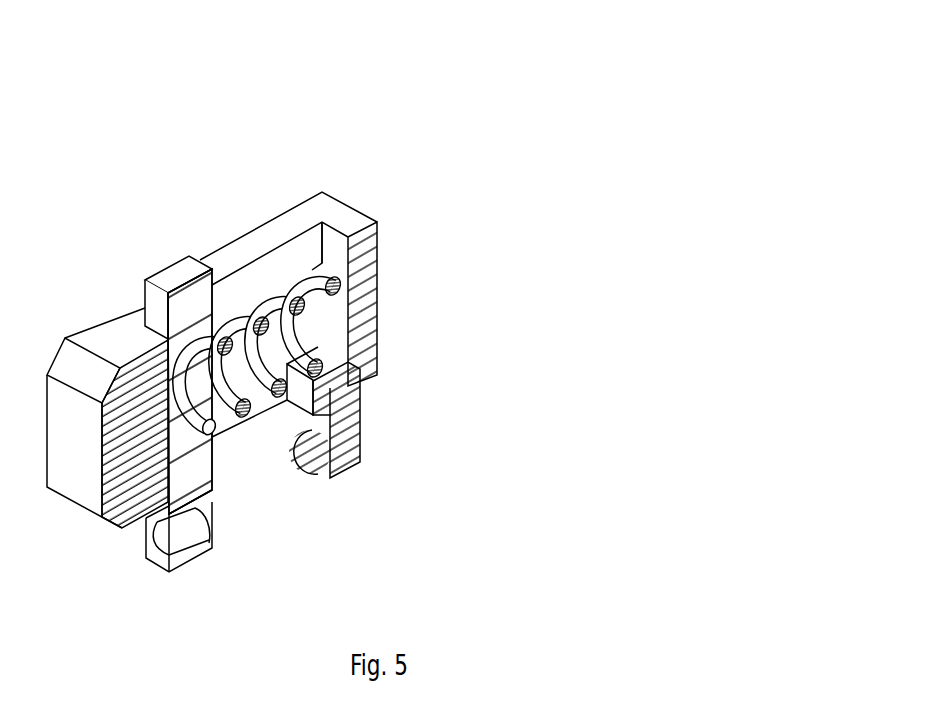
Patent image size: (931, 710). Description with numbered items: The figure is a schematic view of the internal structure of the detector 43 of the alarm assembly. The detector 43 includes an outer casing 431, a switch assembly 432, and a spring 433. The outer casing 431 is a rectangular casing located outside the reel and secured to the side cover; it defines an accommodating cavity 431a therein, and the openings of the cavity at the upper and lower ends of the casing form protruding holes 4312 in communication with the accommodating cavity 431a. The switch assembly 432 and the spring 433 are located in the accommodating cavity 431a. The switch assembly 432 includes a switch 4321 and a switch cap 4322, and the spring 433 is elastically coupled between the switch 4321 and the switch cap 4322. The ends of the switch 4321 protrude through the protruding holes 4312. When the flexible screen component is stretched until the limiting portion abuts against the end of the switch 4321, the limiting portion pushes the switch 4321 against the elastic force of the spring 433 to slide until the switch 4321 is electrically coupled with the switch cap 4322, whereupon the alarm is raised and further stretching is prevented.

The detector 43 is at (400, 173).
The outer casing 431 is at (370, 313).
The accommodating cavity 431a is at (332, 247).
The protruding hole 4312 is at (223, 292).
The switch assembly 432 is at (323, 476).
The switch 4321 is at (190, 553).
The switch cap 4322 is at (315, 478).
The spring 433 is at (263, 310).